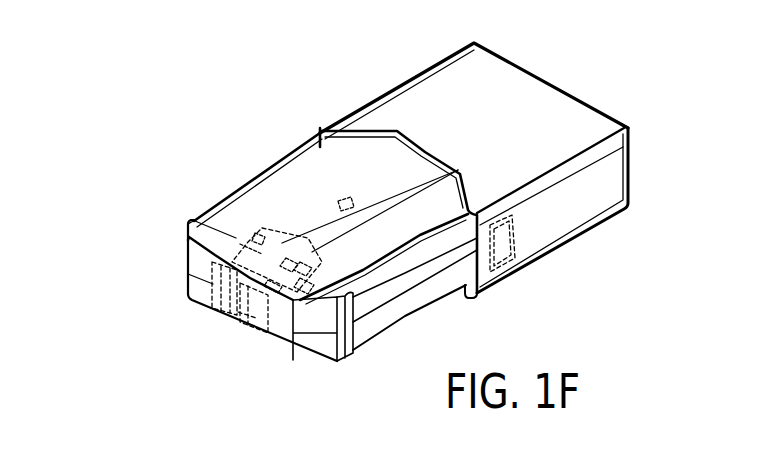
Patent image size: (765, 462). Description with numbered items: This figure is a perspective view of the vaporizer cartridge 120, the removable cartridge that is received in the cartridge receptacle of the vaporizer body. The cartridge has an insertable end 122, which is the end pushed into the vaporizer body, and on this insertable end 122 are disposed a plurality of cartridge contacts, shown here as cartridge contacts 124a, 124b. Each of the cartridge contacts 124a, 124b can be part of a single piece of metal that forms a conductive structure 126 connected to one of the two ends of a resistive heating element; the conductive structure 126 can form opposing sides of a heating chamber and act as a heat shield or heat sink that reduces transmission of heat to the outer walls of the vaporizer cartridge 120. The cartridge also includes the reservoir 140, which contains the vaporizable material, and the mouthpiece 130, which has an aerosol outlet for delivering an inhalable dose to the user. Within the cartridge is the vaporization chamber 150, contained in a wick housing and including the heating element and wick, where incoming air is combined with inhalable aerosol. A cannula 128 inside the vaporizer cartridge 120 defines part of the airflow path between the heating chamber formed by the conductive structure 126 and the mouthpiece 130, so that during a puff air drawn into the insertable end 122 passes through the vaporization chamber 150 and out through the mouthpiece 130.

The vaporizer cartridge 120 is at (278, 79).
The insertable end 122 is at (178, 259).
The cartridge contact 124a is at (200, 306).
The cartridge contact 124b is at (247, 336).
The conductive structure 126 is at (235, 231).
The cannula 128 is at (326, 223).
The mouthpiece 130 is at (535, 162).
The reservoir 140 is at (380, 242).
The vaporization chamber 150 is at (331, 278).